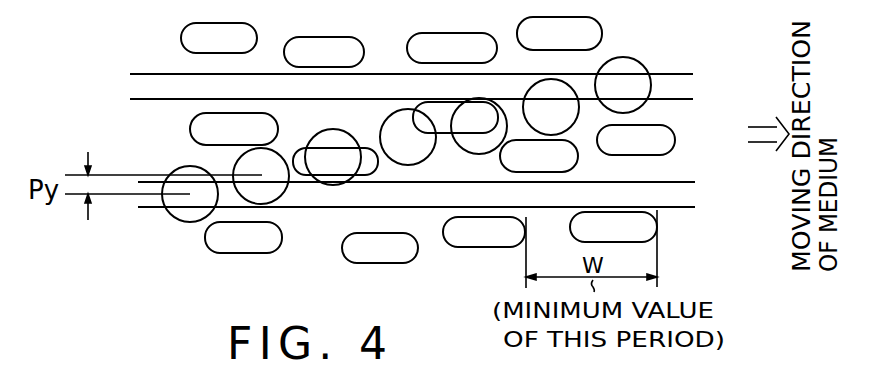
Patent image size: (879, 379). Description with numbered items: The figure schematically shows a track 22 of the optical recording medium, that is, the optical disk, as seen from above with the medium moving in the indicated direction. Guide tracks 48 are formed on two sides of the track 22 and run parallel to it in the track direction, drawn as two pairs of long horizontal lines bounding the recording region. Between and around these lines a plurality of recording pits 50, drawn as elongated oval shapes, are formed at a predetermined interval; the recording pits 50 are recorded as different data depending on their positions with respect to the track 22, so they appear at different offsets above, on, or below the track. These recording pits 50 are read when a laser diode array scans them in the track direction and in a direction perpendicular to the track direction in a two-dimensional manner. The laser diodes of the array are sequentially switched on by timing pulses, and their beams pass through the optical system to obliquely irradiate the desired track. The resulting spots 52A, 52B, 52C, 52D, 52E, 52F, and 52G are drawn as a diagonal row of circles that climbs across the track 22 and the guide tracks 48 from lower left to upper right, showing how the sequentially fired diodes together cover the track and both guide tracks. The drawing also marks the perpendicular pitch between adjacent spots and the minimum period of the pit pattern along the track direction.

The track 22 is at (670, 167).
The guide tracks 48 is at (685, 85).
The recording pits 50 is at (334, 37).
The spot 52A is at (192, 222).
The spot 52B is at (233, 164).
The spot 52C is at (310, 138).
The spot 52D is at (419, 160).
The spot 52E is at (476, 98).
The spot 52F is at (527, 100).
The spot 52G is at (641, 44).